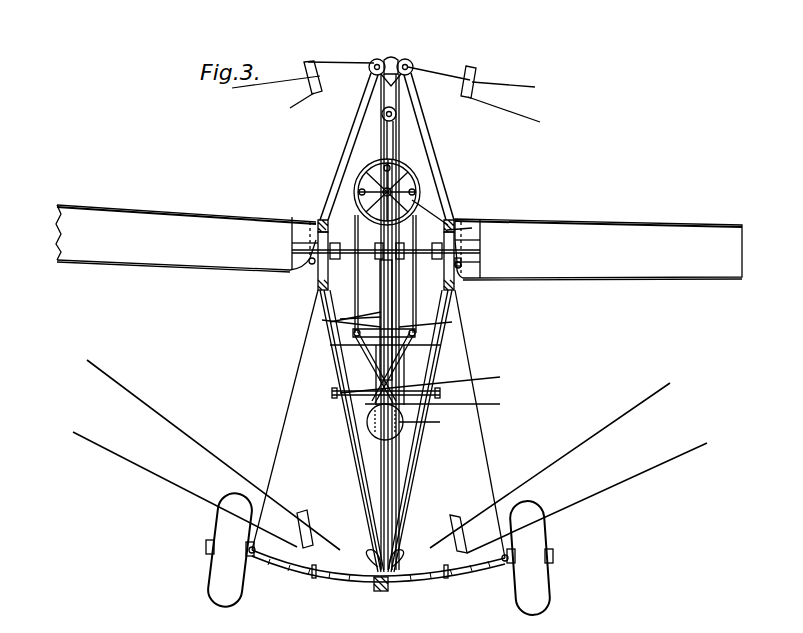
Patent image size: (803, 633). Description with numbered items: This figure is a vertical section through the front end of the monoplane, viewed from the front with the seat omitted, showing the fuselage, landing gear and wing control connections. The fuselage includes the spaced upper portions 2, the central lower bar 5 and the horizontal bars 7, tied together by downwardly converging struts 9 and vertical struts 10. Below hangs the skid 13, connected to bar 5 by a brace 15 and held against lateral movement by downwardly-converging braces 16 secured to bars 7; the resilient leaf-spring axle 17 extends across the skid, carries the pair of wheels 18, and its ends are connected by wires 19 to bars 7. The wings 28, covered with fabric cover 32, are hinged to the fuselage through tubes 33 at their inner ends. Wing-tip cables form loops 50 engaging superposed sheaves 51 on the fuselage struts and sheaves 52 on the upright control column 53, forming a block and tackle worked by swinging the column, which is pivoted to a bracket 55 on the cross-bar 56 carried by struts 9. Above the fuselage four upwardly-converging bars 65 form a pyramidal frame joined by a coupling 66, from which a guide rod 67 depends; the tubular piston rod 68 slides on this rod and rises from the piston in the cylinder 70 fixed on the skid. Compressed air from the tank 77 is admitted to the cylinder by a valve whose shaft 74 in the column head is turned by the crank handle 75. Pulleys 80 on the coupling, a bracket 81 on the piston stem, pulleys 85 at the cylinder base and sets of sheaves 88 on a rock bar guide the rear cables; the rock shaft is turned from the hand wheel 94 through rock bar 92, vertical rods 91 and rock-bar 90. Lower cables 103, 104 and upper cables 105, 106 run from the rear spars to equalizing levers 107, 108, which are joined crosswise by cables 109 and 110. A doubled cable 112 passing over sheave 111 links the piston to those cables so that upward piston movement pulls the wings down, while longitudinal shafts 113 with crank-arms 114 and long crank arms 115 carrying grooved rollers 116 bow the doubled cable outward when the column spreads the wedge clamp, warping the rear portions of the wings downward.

The spaced portions of fuselage bars 2 is at (302, 218).
The bar 5 is at (365, 406).
The horizontal bars 7 is at (318, 284).
The downwardly converging struts 9 is at (440, 390).
The vertical struts 10 is at (292, 256).
The skid 13 is at (377, 592).
The brace 15 is at (394, 512).
The downwardly-converging braces 16 is at (358, 432).
The resilient axle 17 is at (446, 590).
The wheels 18 is at (212, 586).
The wires 19 is at (292, 438).
The wings 28 is at (140, 212).
The fabric cover 32 is at (182, 213).
The tubes 33 is at (150, 266).
The loops 50 is at (480, 212).
The superposed sheaves 51 is at (462, 242).
The superposed sheaves 52 is at (462, 265).
The control column 53 is at (378, 296).
The bracket 55 is at (430, 347).
The cross-bar 56 is at (430, 362).
The upwardly-converging bars 65 is at (354, 142).
The coupling 66 is at (393, 60).
The guide rod 67 is at (384, 102).
The tubular piston rod 68 is at (378, 127).
The cylinder 70 is at (370, 475).
The shaft 74 is at (342, 184).
The crank handle 75 is at (358, 188).
The compressed air tank 77 is at (440, 422).
The grooved pulleys 80 is at (376, 59).
The bracket 81 is at (398, 117).
The pulleys 85 is at (367, 551).
The sheaves 88 is at (370, 322).
The rock-bar 90 is at (360, 365).
The vertical rods 91 is at (322, 320).
The rock bar 92 is at (430, 180).
The hand wheel 94 is at (480, 202).
The lower cables 103 is at (73, 432).
The lower cables 104 is at (86, 360).
The upper cables 105 is at (535, 86).
The upper cables 106 is at (280, 105).
The equalizing levers 107 is at (466, 537).
The equalizing levers 108 is at (307, 62).
The cable 109 is at (447, 70).
The cable 110 is at (366, 66).
The sheave 111 is at (398, 128).
The doubled cable 112 is at (455, 132).
The longitudinal shafts 113 is at (335, 393).
The crank-arms 114 is at (345, 392).
The long crank arms 115 is at (330, 322).
The grooved rollers 116 is at (340, 319).